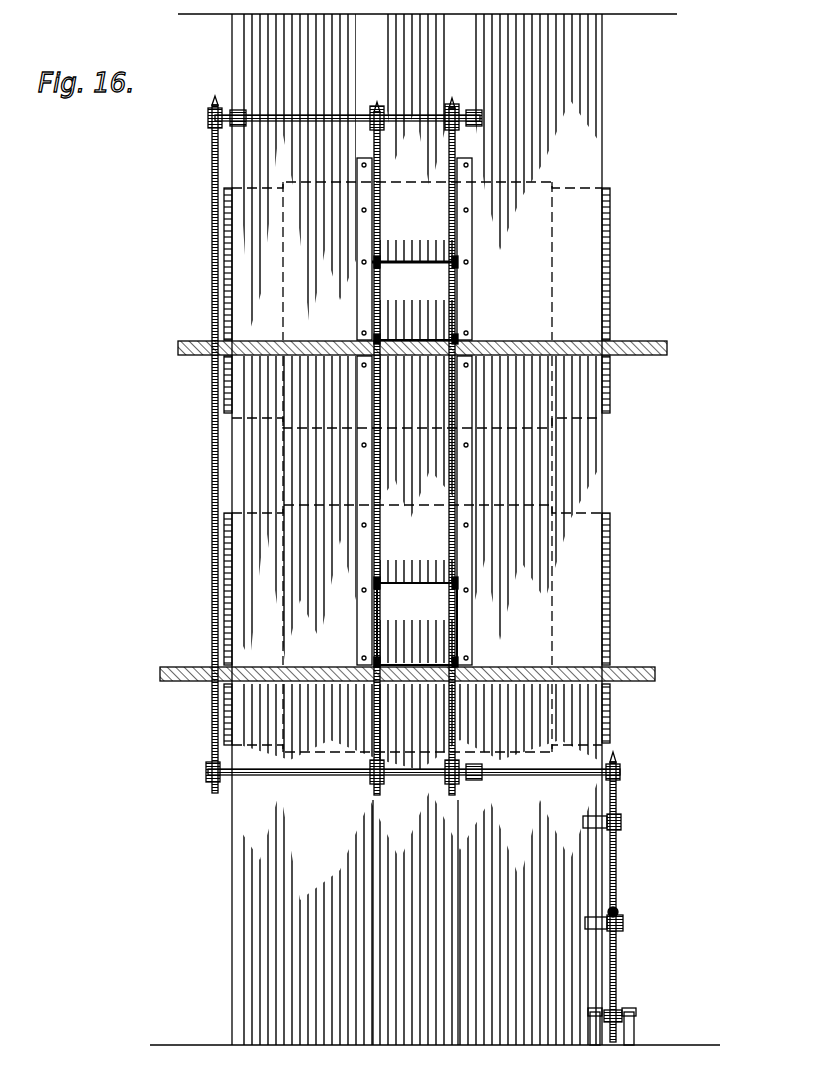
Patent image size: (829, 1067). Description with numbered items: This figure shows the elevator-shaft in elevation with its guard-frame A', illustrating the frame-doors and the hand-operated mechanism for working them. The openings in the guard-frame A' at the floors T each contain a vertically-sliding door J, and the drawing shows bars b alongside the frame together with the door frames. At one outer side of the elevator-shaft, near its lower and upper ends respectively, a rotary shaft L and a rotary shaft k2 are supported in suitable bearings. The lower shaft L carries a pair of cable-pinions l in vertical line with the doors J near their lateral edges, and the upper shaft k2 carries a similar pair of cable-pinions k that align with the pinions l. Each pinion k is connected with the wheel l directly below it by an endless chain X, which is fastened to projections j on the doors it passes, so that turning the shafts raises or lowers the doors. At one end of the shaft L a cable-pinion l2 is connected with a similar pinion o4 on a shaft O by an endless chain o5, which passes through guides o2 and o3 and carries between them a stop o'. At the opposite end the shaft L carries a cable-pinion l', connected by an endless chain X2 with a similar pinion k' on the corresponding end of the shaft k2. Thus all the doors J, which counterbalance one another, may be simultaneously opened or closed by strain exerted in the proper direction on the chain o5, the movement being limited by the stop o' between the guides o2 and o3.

The floor T is at (622, 343).
The vertical rack bars b is at (222, 250).
The endless chain X is at (378, 170).
The endless chain X2 is at (214, 448).
The vertically-sliding door J is at (414, 463).
The projection j is at (380, 266).
The rotary shaft k2 is at (290, 113).
The cable-pinion k is at (426, 431).
The cable-pinion k' is at (204, 444).
The rotary shaft L is at (322, 778).
The cable-pinion l is at (426, 789).
The cable-pinion l' is at (208, 796).
The cable-pinion l2 is at (622, 772).
The guide o3 is at (628, 822).
The endless chain o5 is at (620, 874).
The stop o' is at (636, 900).
The guide o2 is at (630, 924).
The cable-pinion o4 is at (620, 1010).
The shaft O is at (636, 1016).
The guard-frame A' is at (415, 922).